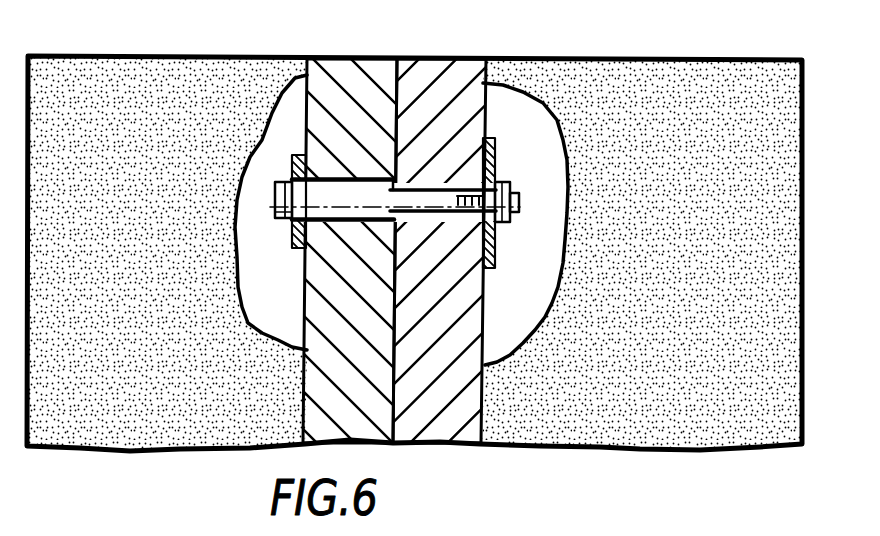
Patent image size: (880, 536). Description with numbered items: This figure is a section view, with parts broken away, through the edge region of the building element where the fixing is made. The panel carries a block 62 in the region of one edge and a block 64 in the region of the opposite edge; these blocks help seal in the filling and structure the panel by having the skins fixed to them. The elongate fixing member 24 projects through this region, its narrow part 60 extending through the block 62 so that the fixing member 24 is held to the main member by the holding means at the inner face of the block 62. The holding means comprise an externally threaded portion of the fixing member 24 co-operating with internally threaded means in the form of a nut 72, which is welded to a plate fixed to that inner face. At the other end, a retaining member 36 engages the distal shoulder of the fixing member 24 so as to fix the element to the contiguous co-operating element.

The block 64 is at (337, 88).
The block 62 is at (441, 84).
The retaining member 36 is at (292, 236).
The elongate fixing member 24 is at (335, 214).
The narrow part 60 is at (425, 224).
The nut 72 is at (502, 184).